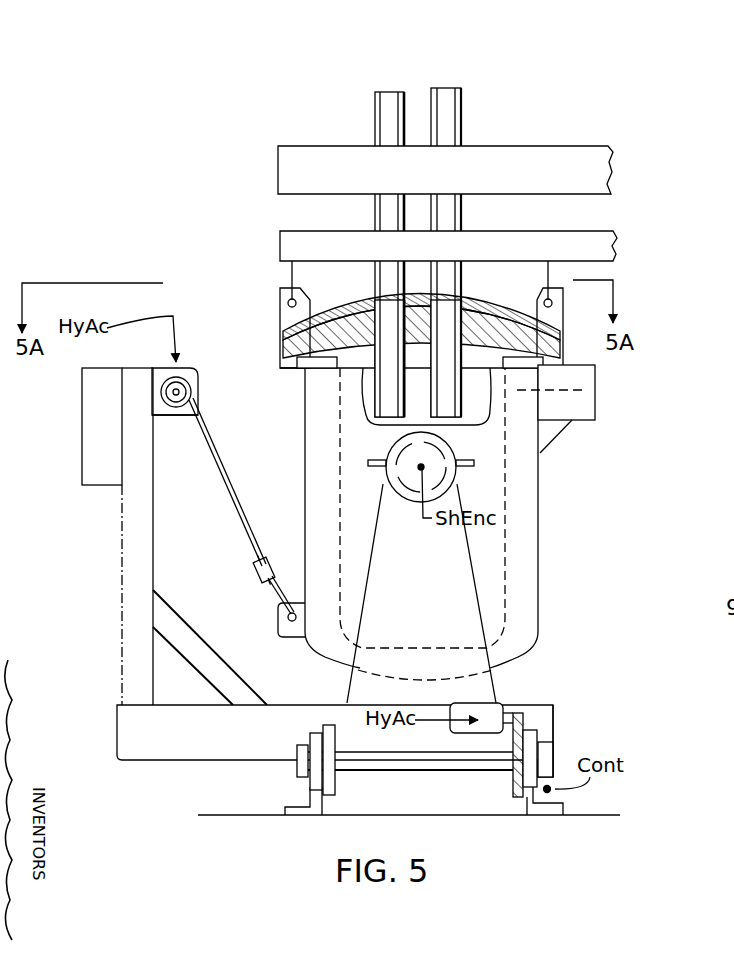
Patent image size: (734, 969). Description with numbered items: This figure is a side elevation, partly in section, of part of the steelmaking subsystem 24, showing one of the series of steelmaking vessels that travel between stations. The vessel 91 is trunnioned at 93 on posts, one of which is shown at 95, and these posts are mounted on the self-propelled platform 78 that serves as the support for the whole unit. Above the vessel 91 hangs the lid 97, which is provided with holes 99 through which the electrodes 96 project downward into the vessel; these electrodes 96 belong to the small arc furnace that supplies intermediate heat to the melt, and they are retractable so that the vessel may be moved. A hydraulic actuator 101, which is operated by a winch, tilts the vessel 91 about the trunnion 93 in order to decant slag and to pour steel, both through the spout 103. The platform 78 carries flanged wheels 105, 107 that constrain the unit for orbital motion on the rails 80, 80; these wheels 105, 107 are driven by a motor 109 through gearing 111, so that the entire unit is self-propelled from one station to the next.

The electrodes 96 is at (444, 90).
The holes 99 is at (364, 300).
The lid 97 is at (279, 343).
The vessel 91 is at (527, 567).
The trunnion 93 is at (408, 480).
The post 95 is at (473, 575).
The spout 103 is at (595, 388).
The subsystem 24 is at (632, 308).
The hydraulic actuator 101 is at (190, 377).
The self-propelled platform 78 is at (547, 700).
The rails 80 is at (285, 807).
The wheel 105 is at (333, 780).
The wheel 107 is at (530, 773).
The motor 109 is at (458, 733).
The gearing 111 is at (523, 727).